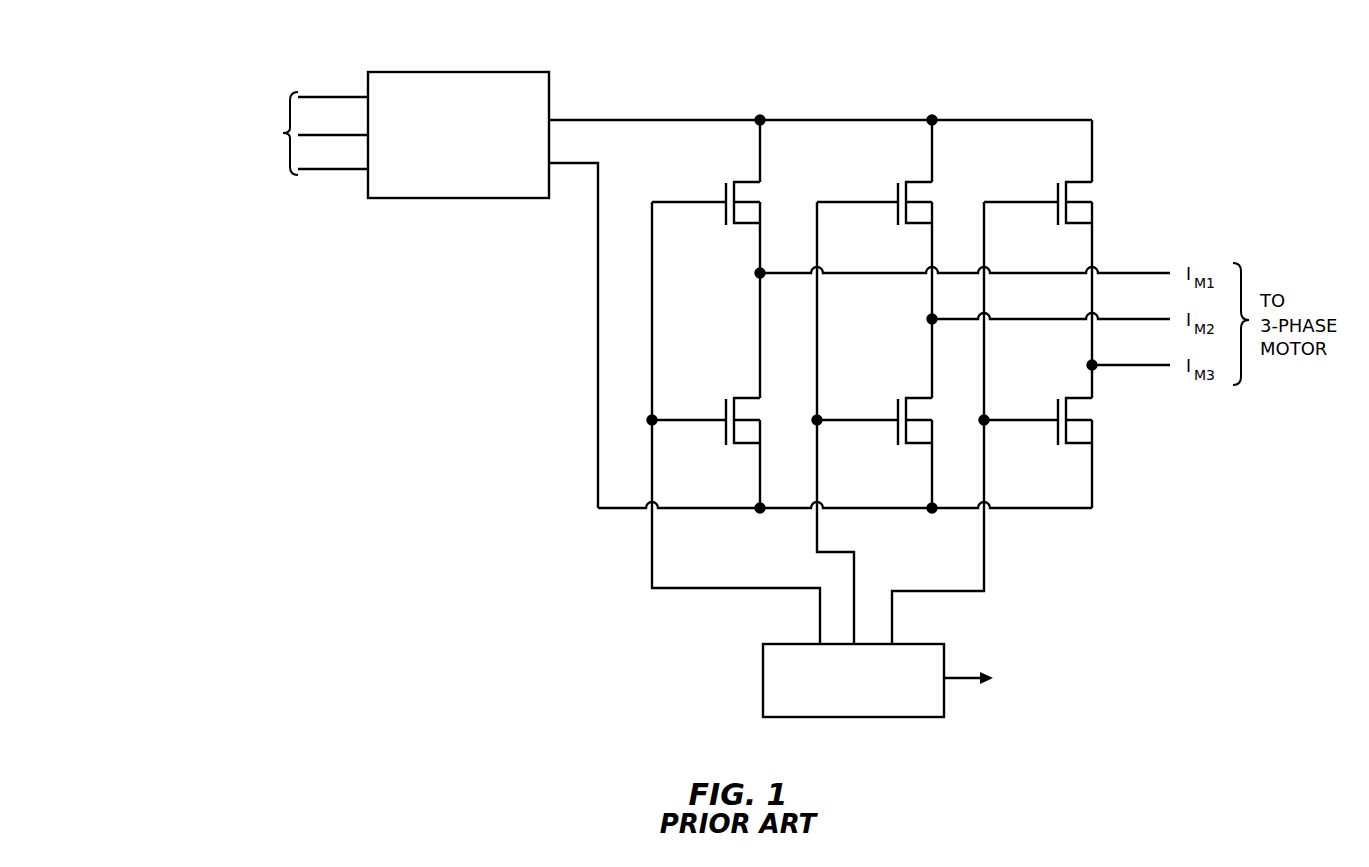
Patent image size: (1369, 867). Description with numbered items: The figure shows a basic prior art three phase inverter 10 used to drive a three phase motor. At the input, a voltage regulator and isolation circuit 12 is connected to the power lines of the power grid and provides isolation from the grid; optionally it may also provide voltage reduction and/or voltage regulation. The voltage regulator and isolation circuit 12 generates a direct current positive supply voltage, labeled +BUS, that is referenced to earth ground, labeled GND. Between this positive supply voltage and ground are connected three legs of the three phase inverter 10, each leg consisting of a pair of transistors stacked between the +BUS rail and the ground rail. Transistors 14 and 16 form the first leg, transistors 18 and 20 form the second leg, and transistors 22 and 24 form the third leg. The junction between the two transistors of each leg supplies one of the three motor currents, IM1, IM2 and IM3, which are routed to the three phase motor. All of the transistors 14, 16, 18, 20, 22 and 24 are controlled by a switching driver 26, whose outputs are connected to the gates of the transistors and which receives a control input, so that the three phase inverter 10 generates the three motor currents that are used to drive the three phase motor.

The three phase inverter 10 is at (912, 56).
The voltage regulator and isolation circuit 12 is at (507, 72).
The transistor 14 is at (727, 198).
The transistor 16 is at (727, 416).
The transistor 18 is at (898, 198).
The transistor 20 is at (898, 416).
The transistor 22 is at (1058, 199).
The transistor 24 is at (1058, 416).
The switching driver 26 is at (763, 674).